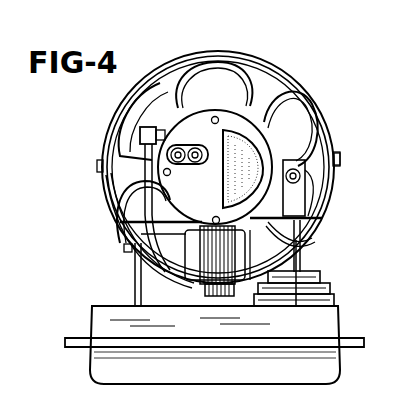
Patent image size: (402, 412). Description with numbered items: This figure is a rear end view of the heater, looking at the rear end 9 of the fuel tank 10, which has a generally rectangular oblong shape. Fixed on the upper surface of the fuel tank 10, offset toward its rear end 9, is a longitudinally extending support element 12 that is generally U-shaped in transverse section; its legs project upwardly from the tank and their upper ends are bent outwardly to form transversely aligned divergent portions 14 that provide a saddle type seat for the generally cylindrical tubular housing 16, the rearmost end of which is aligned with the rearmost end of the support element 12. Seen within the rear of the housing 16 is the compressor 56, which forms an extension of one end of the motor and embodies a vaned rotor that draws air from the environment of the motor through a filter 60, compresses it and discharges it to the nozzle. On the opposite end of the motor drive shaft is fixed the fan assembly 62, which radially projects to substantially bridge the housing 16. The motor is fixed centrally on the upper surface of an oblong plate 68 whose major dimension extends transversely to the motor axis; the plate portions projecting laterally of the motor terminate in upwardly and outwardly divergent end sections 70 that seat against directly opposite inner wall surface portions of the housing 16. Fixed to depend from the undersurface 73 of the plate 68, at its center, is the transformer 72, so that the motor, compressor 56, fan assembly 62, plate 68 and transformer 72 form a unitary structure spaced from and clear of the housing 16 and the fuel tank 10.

The rear end 9 is at (328, 316).
The fuel tank 10 is at (96, 364).
The support element 12 is at (134, 281).
The divergent portions 14 is at (127, 250).
The tubular housing 16 is at (335, 178).
The compressor 56 is at (262, 130).
The filter 60 is at (250, 155).
The fan assembly 62 is at (204, 75).
The oblong plate 68 is at (133, 206).
The end sections 70 is at (322, 217).
The transformer 72 is at (197, 293).
The undersurface 73 is at (304, 250).